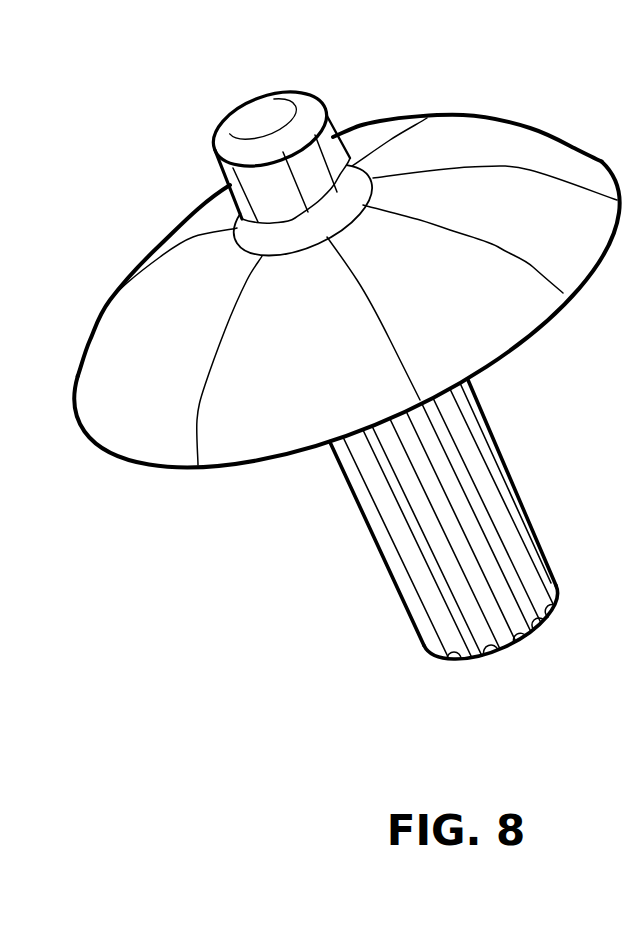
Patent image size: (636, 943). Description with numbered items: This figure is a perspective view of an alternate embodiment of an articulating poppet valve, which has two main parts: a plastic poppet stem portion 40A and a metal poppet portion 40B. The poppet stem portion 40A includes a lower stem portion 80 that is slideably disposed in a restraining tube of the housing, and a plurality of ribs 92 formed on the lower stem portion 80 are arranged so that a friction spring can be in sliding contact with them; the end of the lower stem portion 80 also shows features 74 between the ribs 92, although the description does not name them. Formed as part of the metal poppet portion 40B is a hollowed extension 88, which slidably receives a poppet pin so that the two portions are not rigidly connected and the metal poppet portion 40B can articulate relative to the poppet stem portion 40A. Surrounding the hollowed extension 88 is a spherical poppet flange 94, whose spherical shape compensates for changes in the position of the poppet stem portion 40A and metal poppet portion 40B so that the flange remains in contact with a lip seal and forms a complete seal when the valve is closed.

The poppet stem portion 40A is at (444, 552).
The metal poppet portion 40B is at (346, 261).
The grooves 74 is at (457, 622).
The lower stem portion 80 is at (521, 637).
The hollowed extension 88 is at (318, 137).
The ribs 92 is at (457, 492).
The spherical poppet flange 94 is at (523, 147).